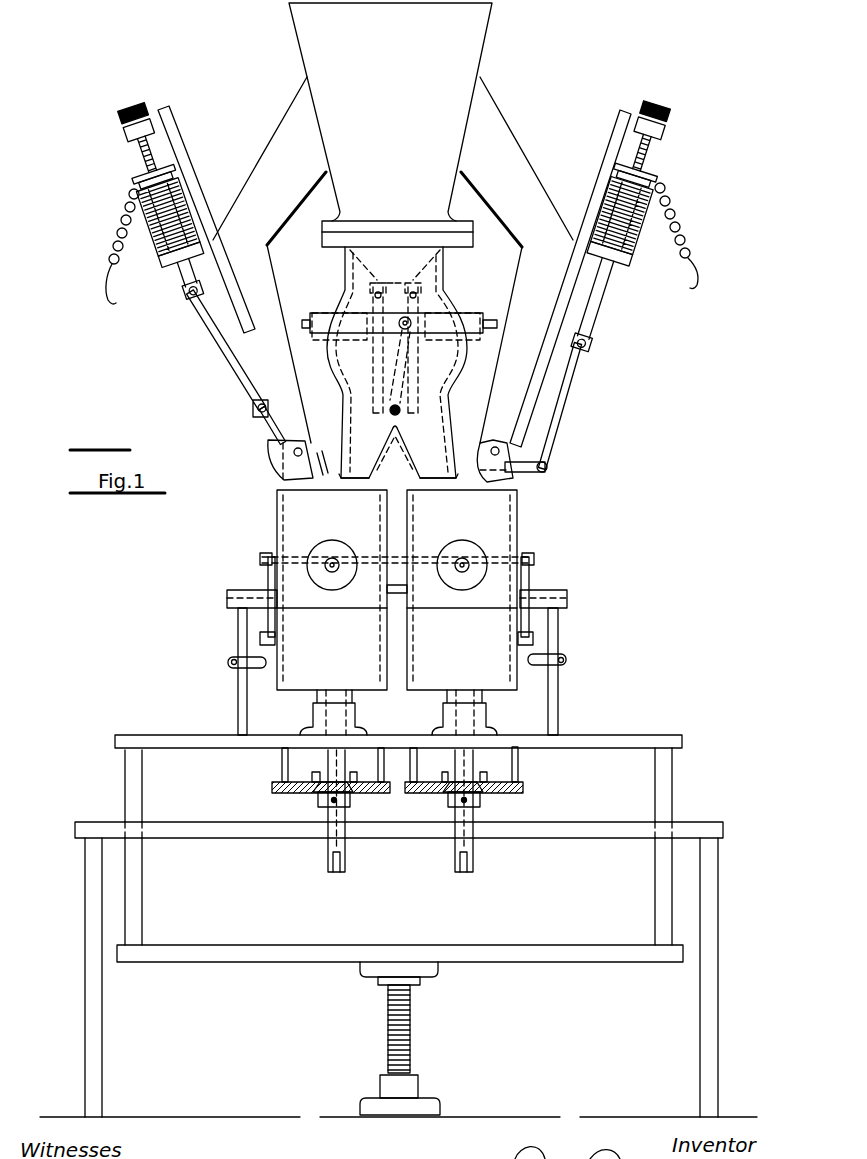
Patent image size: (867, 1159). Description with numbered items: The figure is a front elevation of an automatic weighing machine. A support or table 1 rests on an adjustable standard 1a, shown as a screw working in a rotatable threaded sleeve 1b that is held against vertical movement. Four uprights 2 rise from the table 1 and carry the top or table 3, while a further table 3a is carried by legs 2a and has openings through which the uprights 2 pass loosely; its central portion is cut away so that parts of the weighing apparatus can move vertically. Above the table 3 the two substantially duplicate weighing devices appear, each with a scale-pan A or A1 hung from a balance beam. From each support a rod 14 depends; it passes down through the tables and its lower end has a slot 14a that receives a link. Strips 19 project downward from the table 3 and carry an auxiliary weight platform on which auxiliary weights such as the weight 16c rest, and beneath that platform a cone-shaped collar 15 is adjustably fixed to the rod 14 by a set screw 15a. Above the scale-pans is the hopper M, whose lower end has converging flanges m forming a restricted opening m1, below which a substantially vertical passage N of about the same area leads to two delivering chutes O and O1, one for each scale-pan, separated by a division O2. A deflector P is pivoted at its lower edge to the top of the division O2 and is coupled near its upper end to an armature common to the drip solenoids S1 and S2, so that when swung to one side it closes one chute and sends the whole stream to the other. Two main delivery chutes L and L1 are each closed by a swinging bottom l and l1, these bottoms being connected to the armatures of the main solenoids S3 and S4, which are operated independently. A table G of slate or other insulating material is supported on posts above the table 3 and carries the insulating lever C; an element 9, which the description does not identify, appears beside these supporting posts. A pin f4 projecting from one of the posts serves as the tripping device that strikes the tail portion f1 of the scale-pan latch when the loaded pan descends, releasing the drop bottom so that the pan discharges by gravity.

The hopper M is at (403, 68).
The main delivery chute L is at (523, 147).
The main delivery chute L1 is at (270, 137).
The converging flanges m is at (372, 257).
The opening m1 is at (398, 262).
The passage N is at (393, 310).
The drip solenoid S1 is at (327, 313).
The drip solenoid S2 is at (463, 310).
The main solenoid S3 is at (600, 258).
The main solenoid S4 is at (153, 253).
The deflector P is at (393, 372).
The delivering chute O is at (440, 480).
The delivering chute O1 is at (345, 480).
The division O2 is at (393, 427).
The swinging bottom l is at (515, 477).
The swinging bottom l1 is at (270, 470).
The lever C is at (260, 573).
The table G is at (233, 588).
The scale-pan A is at (462, 612).
The left receptacle A1 is at (332, 612).
The post 9 is at (232, 632).
The tail-portion f1 is at (258, 638).
The pin f4 is at (257, 660).
The top or table 3 is at (582, 735).
The table 3a is at (623, 822).
The uprights 2 is at (125, 757).
The legs 2a is at (103, 1040).
The support 1 is at (323, 962).
The adjustable standard 1a is at (410, 1040).
The threaded sleeve 1b is at (420, 1092).
The strips 19 is at (282, 757).
The auxiliary weight 16c is at (313, 783).
The set screw 15a is at (318, 798).
The cone-shaped collar 15 is at (333, 805).
The rod 14 is at (340, 813).
The slot 14a is at (333, 872).